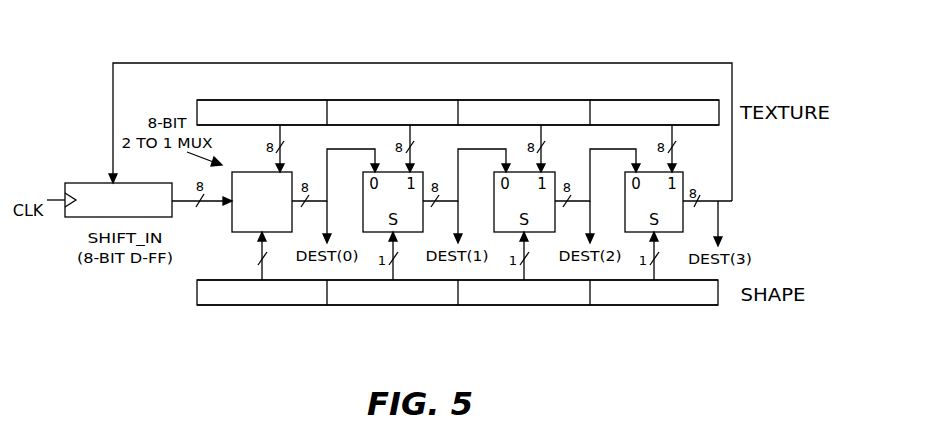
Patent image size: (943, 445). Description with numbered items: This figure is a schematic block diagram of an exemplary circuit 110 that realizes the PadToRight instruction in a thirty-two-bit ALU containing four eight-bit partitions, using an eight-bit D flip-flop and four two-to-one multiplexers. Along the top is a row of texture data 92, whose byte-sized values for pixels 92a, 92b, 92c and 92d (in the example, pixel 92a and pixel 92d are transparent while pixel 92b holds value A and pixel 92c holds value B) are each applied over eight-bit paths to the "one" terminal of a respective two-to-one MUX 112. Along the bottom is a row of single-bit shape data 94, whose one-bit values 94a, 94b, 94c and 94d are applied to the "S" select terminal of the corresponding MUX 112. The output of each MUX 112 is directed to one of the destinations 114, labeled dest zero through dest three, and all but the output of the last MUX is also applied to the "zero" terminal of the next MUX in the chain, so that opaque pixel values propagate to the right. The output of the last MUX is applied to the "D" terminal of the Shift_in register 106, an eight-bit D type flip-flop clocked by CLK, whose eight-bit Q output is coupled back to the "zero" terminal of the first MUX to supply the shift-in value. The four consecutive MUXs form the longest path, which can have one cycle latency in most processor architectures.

The texture data 92 is at (496, 79).
The pixel 92a is at (277, 100).
The pixel 92b is at (403, 100).
The pixel 92c is at (537, 100).
The pixel 92d is at (672, 100).
The shape data 94 is at (478, 316).
The shape data value 94a is at (292, 305).
The shape data value 94b is at (413, 305).
The shape data value 94c is at (545, 305).
The shape data value 94d is at (675, 305).
The Shift_in register 106 is at (98, 183).
The circuit 110 is at (168, 347).
The 2:1 MUX 112 is at (292, 172).
The destination 114 is at (289, 259).